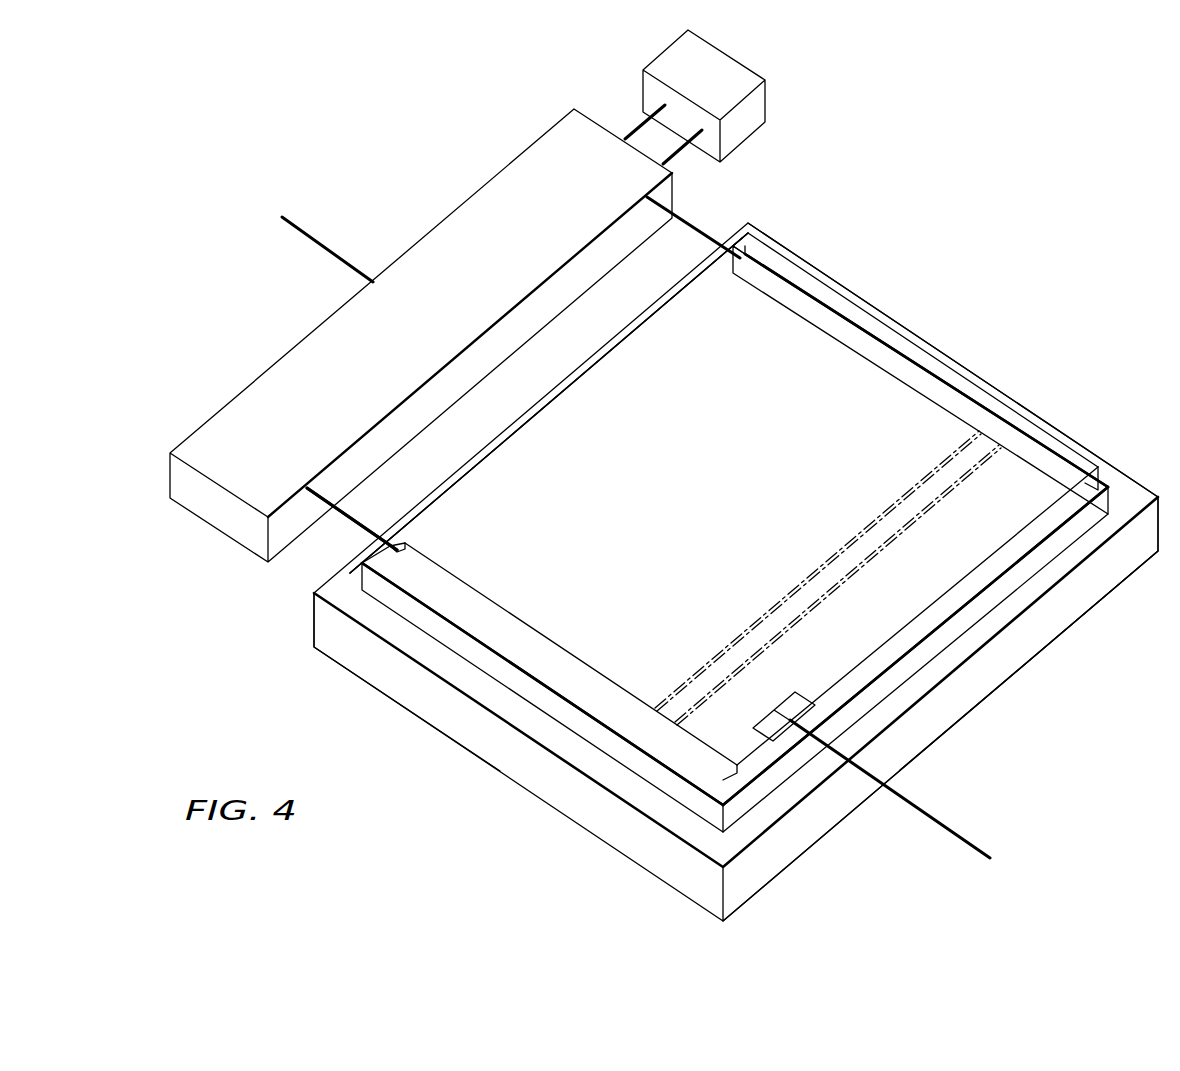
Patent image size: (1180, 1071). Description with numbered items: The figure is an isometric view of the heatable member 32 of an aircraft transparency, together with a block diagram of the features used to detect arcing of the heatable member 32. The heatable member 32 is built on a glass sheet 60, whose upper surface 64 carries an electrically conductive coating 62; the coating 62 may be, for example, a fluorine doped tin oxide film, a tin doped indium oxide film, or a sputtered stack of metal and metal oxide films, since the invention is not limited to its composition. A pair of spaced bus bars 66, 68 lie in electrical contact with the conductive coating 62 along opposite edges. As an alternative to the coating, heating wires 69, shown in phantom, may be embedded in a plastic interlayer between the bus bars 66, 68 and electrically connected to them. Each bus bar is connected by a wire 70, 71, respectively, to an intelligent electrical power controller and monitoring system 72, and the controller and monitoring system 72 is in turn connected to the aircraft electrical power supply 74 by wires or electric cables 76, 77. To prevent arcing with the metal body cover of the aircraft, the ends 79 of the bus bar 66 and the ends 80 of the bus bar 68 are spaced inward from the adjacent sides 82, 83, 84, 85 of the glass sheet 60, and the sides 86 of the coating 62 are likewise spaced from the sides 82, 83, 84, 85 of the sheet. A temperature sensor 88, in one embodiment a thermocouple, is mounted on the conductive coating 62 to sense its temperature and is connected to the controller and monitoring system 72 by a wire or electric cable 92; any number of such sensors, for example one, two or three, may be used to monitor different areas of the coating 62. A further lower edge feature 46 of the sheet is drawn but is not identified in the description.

The heatable member 32 is at (500, 818).
The substrate bottom edge 46 is at (930, 760).
The glass sheet 60 is at (620, 830).
The conductive coating 62 is at (748, 525).
The surface of the glass sheet 64 is at (963, 645).
The bus bar 66 is at (450, 578).
The bus bar 68 is at (825, 317).
The wires 69 is at (890, 512).
The wire 70 is at (332, 505).
The wire 71 is at (700, 230).
The intelligent electrical power controller and monitoring system 72 is at (425, 215).
The aircraft electrical power supply 74 is at (753, 118).
The wire or electric cable 76 is at (635, 127).
The wire or electric cable 77 is at (677, 157).
The ends of the bus bar 66 79 is at (395, 550).
The ends of the bus bar 68 80 is at (712, 246).
The side of the glass sheet 82 is at (1045, 640).
The side of the glass sheet 83 is at (935, 348).
The side of the glass sheet 84 is at (540, 397).
The side of the glass sheet 85 is at (418, 695).
The sides of the coating 86 is at (497, 437).
The temperature sensor 88 is at (777, 700).
The wire or electric cable 92 is at (317, 243).